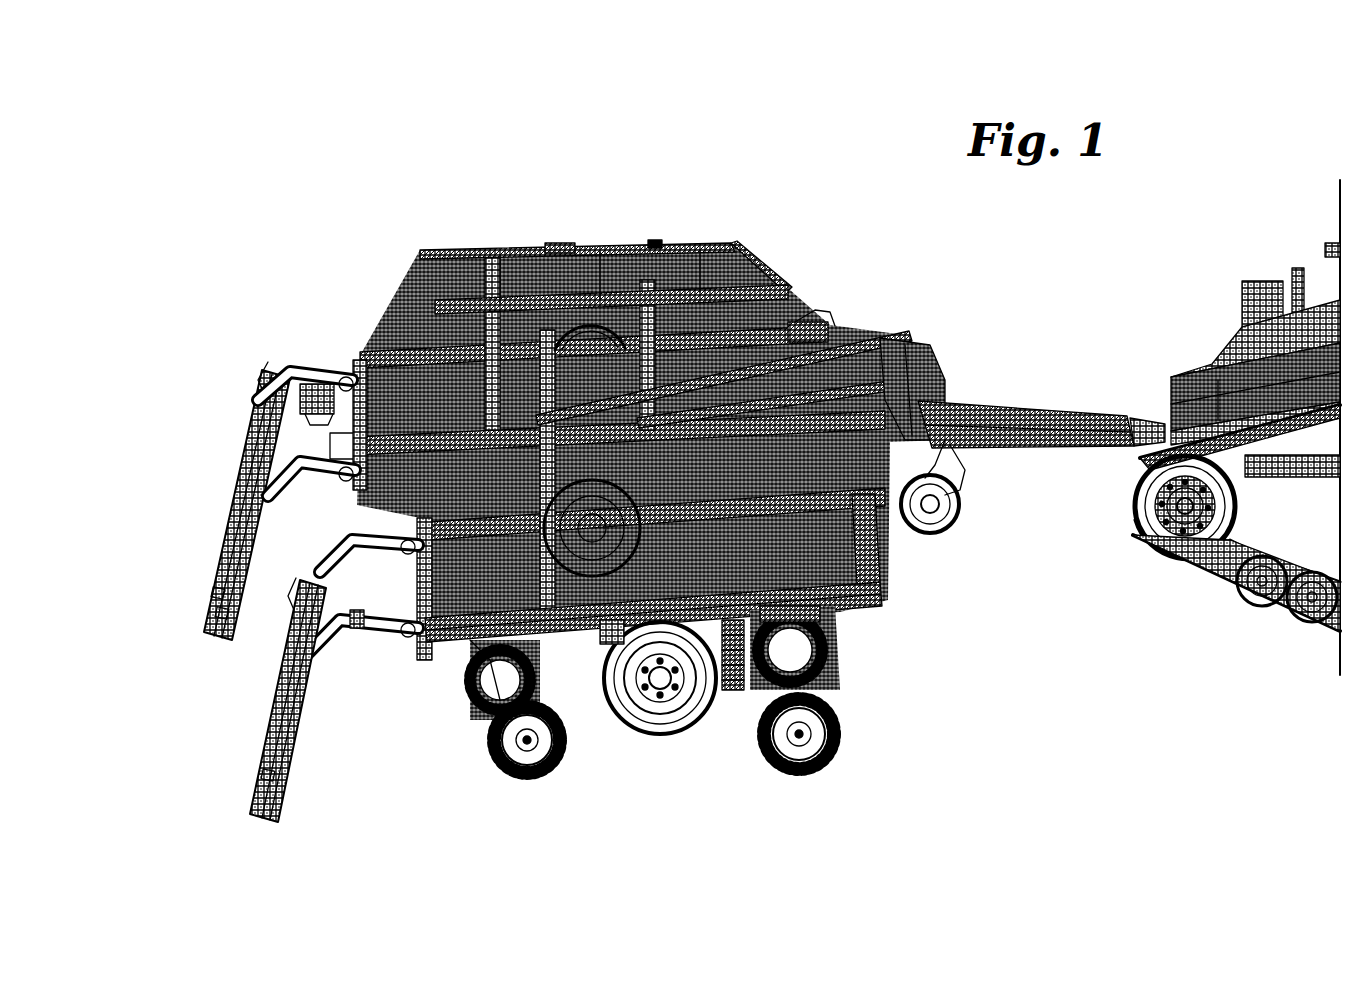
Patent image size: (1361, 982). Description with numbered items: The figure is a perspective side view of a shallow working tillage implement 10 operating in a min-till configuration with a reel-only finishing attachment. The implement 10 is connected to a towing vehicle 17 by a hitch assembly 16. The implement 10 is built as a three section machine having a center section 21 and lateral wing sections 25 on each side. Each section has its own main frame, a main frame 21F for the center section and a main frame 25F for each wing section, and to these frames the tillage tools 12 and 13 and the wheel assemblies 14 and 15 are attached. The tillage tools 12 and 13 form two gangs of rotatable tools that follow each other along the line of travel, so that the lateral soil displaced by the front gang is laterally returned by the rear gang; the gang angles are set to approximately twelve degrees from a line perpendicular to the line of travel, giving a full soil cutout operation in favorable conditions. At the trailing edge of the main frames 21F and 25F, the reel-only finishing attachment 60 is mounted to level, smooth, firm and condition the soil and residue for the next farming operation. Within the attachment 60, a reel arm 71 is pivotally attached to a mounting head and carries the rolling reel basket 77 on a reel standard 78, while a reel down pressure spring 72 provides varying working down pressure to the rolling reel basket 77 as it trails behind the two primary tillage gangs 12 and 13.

The shallow working tillage implement 10 is at (282, 185).
The tillage tools 12 is at (880, 722).
The tillage tools 13 is at (478, 776).
The wheel assembly 14 is at (583, 582).
The wheel assembly 15 is at (665, 726).
The hitch assembly 16 is at (1060, 366).
The towing vehicle 17 is at (1250, 290).
The center section 21 is at (829, 276).
The main frame 21F is at (803, 328).
The lateral wing section 25 is at (613, 210).
The main frame 25F is at (876, 556).
The reel-only finishing attachment 60 is at (190, 792).
The reel arm 71 is at (330, 668).
The reel down pressure spring 72 is at (390, 650).
The rolling reel basket 77 is at (207, 526).
The reel standard 78 is at (205, 640).